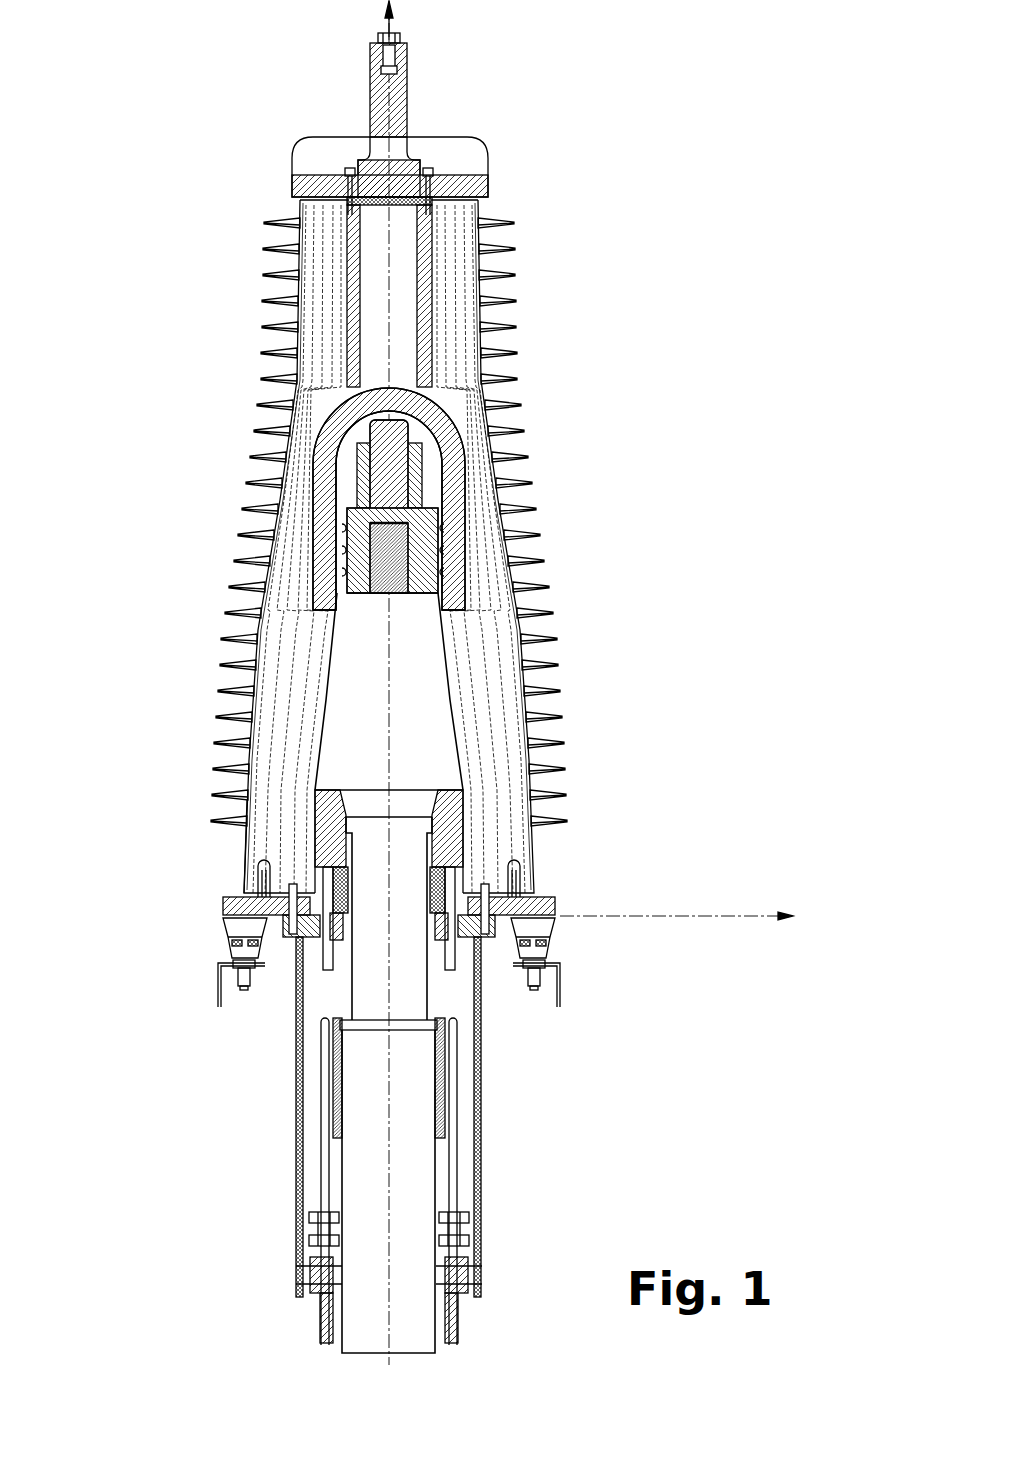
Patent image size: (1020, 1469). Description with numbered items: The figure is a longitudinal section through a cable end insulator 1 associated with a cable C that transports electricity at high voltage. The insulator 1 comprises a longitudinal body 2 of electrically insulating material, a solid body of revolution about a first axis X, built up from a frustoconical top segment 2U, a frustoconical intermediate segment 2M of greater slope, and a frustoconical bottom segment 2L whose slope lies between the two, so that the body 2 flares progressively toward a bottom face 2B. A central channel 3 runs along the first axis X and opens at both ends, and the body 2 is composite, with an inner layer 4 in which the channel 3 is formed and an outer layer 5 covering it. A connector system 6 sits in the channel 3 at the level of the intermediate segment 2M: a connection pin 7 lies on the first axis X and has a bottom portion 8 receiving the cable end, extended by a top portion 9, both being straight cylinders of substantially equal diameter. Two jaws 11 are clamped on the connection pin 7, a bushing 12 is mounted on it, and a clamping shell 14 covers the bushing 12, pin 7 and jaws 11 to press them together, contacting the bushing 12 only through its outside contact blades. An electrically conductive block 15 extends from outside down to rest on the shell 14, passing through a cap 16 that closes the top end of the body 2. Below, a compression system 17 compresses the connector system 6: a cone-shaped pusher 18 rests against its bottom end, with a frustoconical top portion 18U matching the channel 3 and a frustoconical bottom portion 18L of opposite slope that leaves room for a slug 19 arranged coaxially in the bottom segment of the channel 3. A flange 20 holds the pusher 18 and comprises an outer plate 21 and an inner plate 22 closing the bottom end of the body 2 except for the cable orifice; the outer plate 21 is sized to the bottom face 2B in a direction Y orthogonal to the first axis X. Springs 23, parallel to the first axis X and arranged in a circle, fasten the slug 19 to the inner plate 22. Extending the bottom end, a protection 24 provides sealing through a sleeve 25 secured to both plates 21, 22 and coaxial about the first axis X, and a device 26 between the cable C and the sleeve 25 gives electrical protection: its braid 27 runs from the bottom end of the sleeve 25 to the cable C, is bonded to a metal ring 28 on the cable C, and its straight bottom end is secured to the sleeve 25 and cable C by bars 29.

The cable end insulator 1 is at (146, 1022).
The longitudinal body 2 is at (320, 343).
The frustoconical top segment 2U is at (245, 246).
The frustoconical intermediate segment 2M is at (220, 496).
The frustoconical bottom segment 2L is at (203, 753).
The bottom face 2B is at (206, 907).
The central channel 3 is at (437, 324).
The inner layer 4 is at (453, 350).
The outer layer 5 is at (478, 432).
The connector system 6 is at (307, 600).
The connection pin 7 is at (375, 492).
The bottom portion 8 is at (438, 555).
The top portion 9 is at (437, 463).
The jaws 11 is at (348, 593).
The bushing 12 is at (396, 466).
The clamping shell 14 is at (345, 400).
The block 15 is at (430, 270).
The cap 16 is at (462, 152).
The compression system 17 is at (296, 846).
The pusher 18 is at (435, 737).
The frustoconical top portion 18U is at (425, 698).
The frustoconical bottom portion 18L is at (440, 803).
The slug 19 is at (455, 828).
The flange 20 is at (248, 933).
The outer plate 21 is at (535, 905).
The inner plate 22 is at (463, 940).
The springs 23 is at (455, 872).
The protection 24 is at (500, 1058).
The sleeve 25 is at (481, 1195).
The device 26 is at (316, 1106).
The braid 27 is at (317, 1170).
The ring 28 is at (445, 1140).
The bars 29 is at (305, 1275).
The cable C is at (415, 1123).
The first axis X is at (392, 23).
The direction Y is at (733, 920).